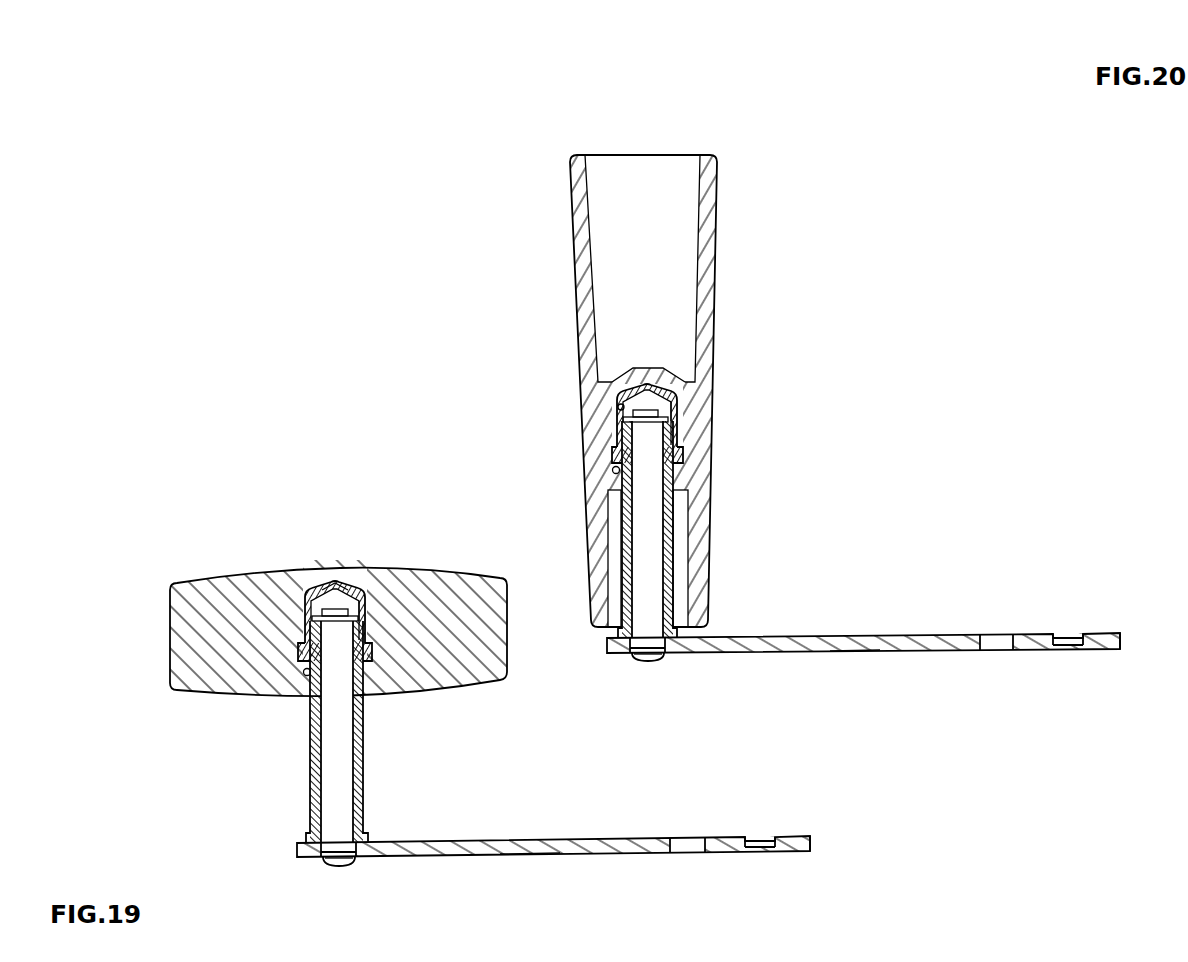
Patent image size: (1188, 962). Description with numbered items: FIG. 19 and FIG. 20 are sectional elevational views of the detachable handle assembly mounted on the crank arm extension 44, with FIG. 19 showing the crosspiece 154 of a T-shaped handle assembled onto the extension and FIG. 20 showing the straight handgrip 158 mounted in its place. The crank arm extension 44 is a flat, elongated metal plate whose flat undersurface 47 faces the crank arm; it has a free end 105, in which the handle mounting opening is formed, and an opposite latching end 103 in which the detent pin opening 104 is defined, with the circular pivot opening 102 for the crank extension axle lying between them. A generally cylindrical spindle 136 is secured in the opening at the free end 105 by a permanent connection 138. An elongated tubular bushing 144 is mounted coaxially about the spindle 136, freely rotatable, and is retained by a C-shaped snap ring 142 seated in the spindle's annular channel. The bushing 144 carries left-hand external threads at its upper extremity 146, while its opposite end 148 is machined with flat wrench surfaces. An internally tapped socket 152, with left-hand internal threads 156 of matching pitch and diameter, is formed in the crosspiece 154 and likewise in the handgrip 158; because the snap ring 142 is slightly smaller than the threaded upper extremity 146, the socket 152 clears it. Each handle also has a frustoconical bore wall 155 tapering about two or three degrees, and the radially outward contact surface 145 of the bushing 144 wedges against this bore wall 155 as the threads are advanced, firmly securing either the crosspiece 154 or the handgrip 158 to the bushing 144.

In FIG. 19, the crank arm extension 44 is at (566, 832).
In FIG. 20, the crank arm extension 44 is at (870, 630).
In FIG. 19, the undersurface 47 is at (526, 858).
In FIG. 20, the undersurface 47 is at (850, 652).
In FIG. 19, the pivot opening 102 is at (692, 843).
In FIG. 20, the pivot opening 102 is at (1000, 633).
In FIG. 19, the latching end 103 is at (812, 838).
In FIG. 20, the latching end 103 is at (1102, 650).
In FIG. 19, the detent pin opening 104 is at (760, 843).
In FIG. 20, the detent pin opening 104 is at (1076, 633).
In FIG. 19, the free end 105 is at (297, 852).
In FIG. 20, the free end 105 is at (612, 652).
In FIG. 19, the spindle 136 is at (330, 852).
In FIG. 20, the spindle 136 is at (666, 650).
In FIG. 19, the permanent connection 138 is at (346, 876).
In FIG. 20, the permanent connection 138 is at (654, 672).
In FIG. 19, the snap ring 142 is at (322, 592).
In FIG. 20, the snap ring 142 is at (632, 388).
In FIG. 19, the bushing 144 is at (379, 771).
In FIG. 20, the bushing 144 is at (660, 525).
In FIG. 19, the contact surface 145 is at (368, 668).
In FIG. 20, the contact surface 145 is at (685, 462).
In FIG. 19, the upper extremity 146 is at (362, 638).
In FIG. 20, the upper extremity 146 is at (680, 435).
In FIG. 20, the opposite end 148 is at (680, 633).
In FIG. 19, the socket 152 is at (312, 590).
In FIG. 20, the socket 152 is at (680, 395).
In FIG. 19, the crosspiece 154 is at (215, 593).
In FIG. 19, the frustoconical bore wall 155 is at (305, 675).
In FIG. 20, the frustoconical bore wall 155 is at (613, 468).
In FIG. 19, the internal threads 156 is at (356, 590).
In FIG. 20, the internal threads 156 is at (620, 408).
In FIG. 20, the handgrip 158 is at (734, 242).